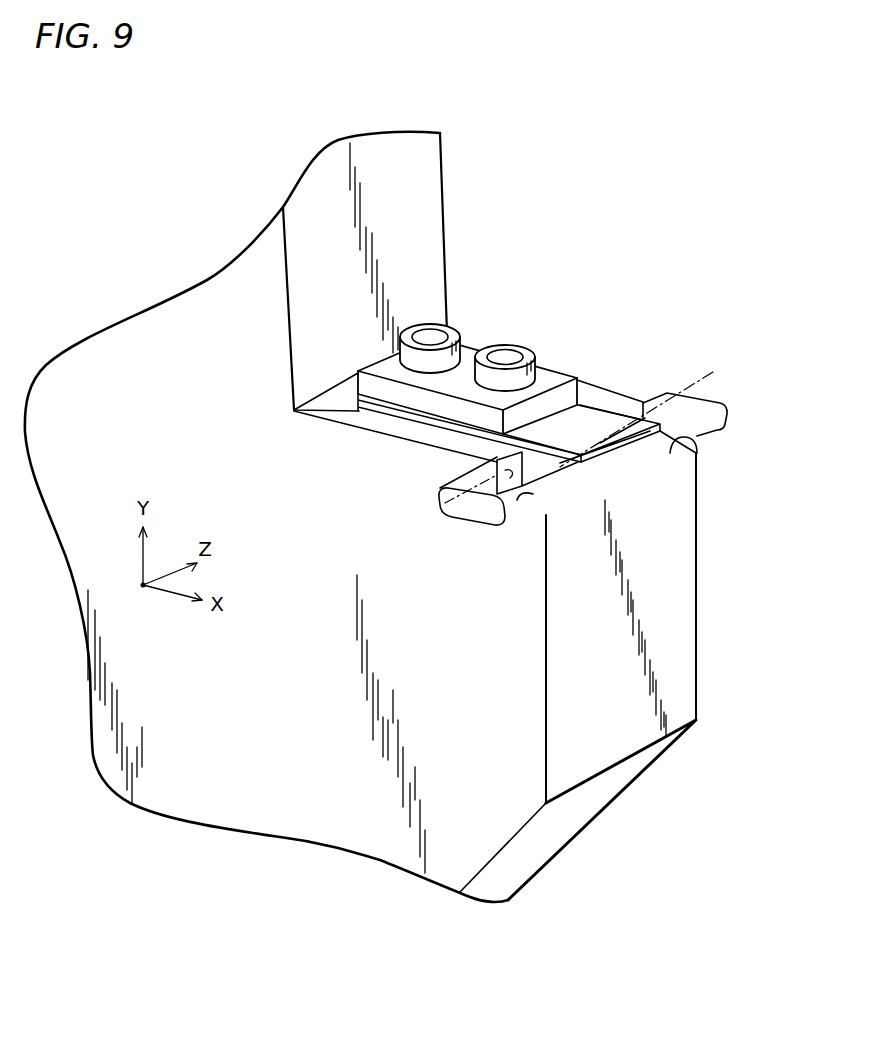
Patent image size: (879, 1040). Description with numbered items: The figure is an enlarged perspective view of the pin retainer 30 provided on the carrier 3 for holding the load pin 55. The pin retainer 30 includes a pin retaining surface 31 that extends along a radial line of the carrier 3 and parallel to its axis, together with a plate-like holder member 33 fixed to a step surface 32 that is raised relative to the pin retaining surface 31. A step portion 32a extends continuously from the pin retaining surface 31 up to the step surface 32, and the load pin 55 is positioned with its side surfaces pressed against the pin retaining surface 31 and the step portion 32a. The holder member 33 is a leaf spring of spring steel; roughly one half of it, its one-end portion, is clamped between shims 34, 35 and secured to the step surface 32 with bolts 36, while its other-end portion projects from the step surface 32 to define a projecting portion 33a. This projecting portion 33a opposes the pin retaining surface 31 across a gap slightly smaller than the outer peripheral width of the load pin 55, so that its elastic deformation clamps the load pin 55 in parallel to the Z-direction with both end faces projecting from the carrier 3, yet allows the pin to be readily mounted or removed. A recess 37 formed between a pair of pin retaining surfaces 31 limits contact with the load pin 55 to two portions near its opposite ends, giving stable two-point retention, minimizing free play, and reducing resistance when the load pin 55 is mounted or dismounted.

The carrier 3 is at (206, 279).
The pin retainer 30 is at (652, 154).
The pin retaining surface 31 is at (723, 456).
The step surface 32 is at (387, 429).
The step portion 32a is at (496, 457).
The holder member 33 is at (593, 399).
The projecting portion 33a is at (635, 398).
The shim 34 is at (296, 410).
The shim 35 is at (543, 368).
The bolts 36 is at (525, 350).
The recess 37 is at (643, 477).
The load pin 55 is at (713, 372).